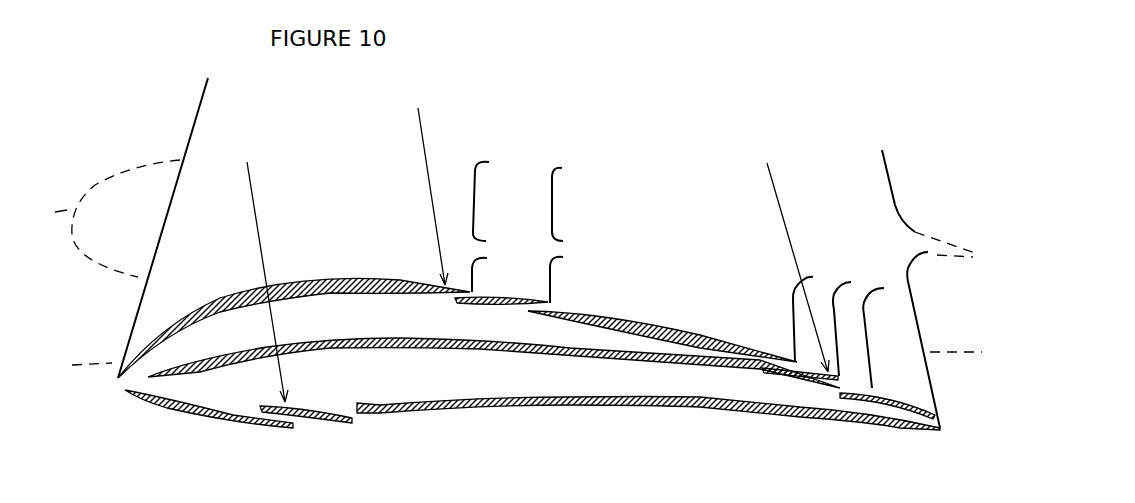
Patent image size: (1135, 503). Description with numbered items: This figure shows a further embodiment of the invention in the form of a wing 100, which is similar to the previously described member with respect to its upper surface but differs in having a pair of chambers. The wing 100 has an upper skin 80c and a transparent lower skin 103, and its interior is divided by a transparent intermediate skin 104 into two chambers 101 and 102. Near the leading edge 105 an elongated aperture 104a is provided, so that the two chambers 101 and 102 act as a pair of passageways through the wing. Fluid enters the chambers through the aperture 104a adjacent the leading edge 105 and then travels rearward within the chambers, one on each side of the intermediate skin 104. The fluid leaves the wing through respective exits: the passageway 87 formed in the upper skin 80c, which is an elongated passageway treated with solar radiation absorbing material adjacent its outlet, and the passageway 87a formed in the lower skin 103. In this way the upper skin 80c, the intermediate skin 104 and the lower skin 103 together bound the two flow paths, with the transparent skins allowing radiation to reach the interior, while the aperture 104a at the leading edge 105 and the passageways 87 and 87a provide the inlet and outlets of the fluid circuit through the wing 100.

The wing 100 is at (331, 99).
The leading edge 105 is at (195, 116).
The passageway 87 is at (482, 170).
The passageway 87a is at (293, 421).
The upper skin 80c is at (667, 325).
The chamber 101 is at (505, 378).
The chamber 102 is at (585, 335).
The transparent lower skin 103 is at (657, 405).
The transparent intermediate skin 104 is at (730, 375).
The elongated aperture 104a is at (118, 388).